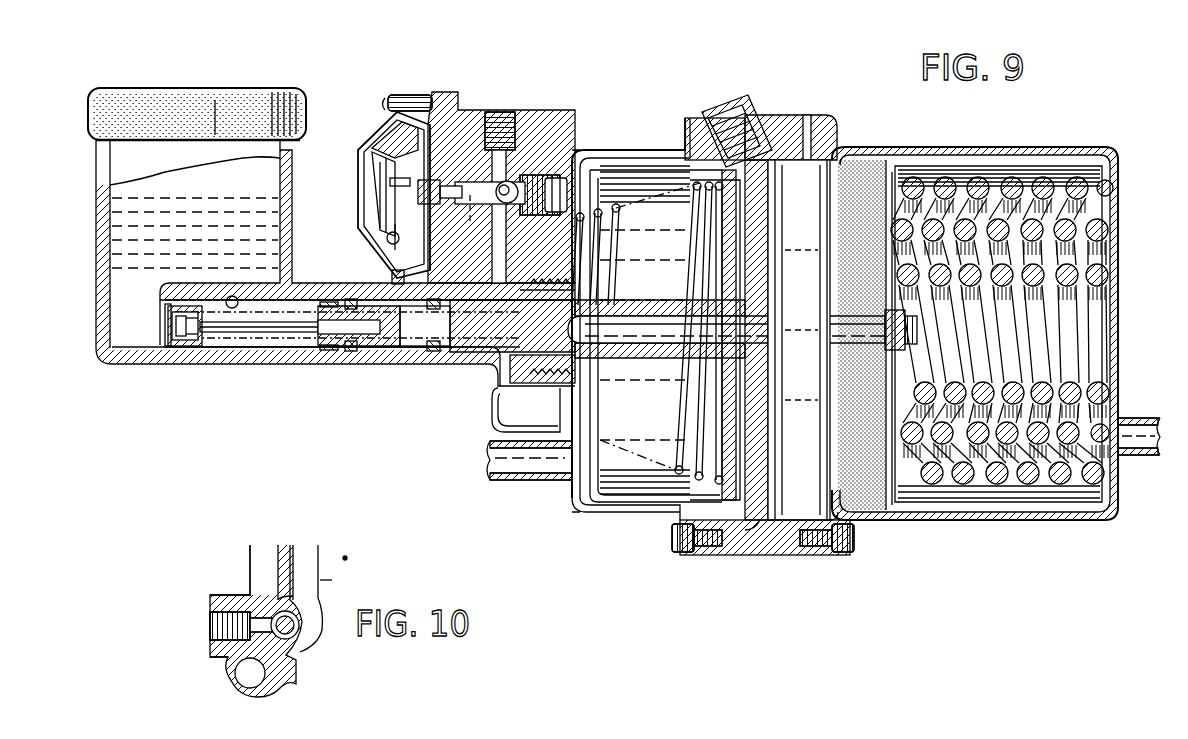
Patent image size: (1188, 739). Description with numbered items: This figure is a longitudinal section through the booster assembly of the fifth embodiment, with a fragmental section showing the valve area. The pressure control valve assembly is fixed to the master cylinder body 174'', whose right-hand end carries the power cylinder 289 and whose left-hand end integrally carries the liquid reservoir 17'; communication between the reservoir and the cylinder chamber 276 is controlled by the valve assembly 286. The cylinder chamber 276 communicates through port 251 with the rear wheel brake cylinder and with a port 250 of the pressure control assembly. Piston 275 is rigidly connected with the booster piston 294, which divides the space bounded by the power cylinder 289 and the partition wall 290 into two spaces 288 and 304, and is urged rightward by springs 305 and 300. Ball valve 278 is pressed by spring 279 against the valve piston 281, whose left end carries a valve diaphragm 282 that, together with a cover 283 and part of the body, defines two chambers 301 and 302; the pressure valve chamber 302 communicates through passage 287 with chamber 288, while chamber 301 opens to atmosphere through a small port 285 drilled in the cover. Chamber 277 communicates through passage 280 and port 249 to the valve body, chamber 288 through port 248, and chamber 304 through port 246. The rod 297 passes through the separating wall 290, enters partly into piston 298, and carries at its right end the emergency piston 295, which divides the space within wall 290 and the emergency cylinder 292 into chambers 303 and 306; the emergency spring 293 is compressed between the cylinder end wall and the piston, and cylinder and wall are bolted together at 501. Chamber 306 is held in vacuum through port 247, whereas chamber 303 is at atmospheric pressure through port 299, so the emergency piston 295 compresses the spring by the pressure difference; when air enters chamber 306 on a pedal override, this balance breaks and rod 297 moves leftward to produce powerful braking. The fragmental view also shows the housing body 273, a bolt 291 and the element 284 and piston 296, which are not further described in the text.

In FIG. 9, the liquid reservoir 17' is at (312, 237).
In FIG. 9, the master cylinder body 174'' is at (200, 354).
In FIG. 9, the port 246 is at (740, 118).
In FIG. 9, the port 247 is at (1140, 420).
In FIG. 9, the port 248 is at (515, 482).
In FIG. 9, the port 249 is at (498, 112).
In FIG. 10, the port 250 is at (210, 626).
In FIG. 9, the port 251 is at (230, 300).
In FIG. 10, the housing body 273 is at (292, 660).
In FIG. 9, the piston 275 is at (405, 360).
In FIG. 9, the cylinder chamber 276 is at (262, 347).
In FIG. 9, the chamber 277 is at (445, 364).
In FIG. 9, the ball valve 278 is at (540, 172).
In FIG. 9, the spring 279 is at (552, 176).
In FIG. 9, the passage 280 is at (512, 206).
In FIG. 9, the valve piston 281 is at (480, 200).
In FIG. 10, the valve piston 281 is at (298, 614).
In FIG. 9, the valve diaphragm 282 is at (388, 132).
In FIG. 9, the cover 283 is at (386, 232).
In FIG. 9, the diaphragm 284 is at (372, 154).
In FIG. 9, the small port 285 is at (378, 194).
In FIG. 9, the valve assembly 286 is at (166, 364).
In FIG. 9, the passage 287 is at (392, 276).
In FIG. 10, the passage 287 is at (238, 680).
In FIG. 9, the chamber 288 is at (605, 507).
In FIG. 9, the power cylinder 289 is at (636, 522).
In FIG. 9, the partition wall 290 is at (756, 540).
In FIG. 9, the bolt 291 is at (698, 550).
In FIG. 9, the emergency cylinder 292 is at (900, 509).
In FIG. 9, the emergency spring 293 is at (968, 484).
In FIG. 9, the booster piston 294 is at (700, 428).
In FIG. 9, the emergency piston 295 is at (885, 420).
In FIG. 9, the piston 296 is at (622, 350).
In FIG. 9, the rod 297 is at (786, 340).
In FIG. 9, the piston 298 is at (760, 304).
In FIG. 9, the port 299 is at (808, 118).
In FIG. 9, the spring 300 is at (608, 258).
In FIG. 9, the chamber 301 is at (368, 244).
In FIG. 9, the pressure valve chamber 302 is at (466, 294).
In FIG. 9, the chamber 303 is at (825, 436).
In FIG. 9, the chamber 304 is at (750, 465).
In FIG. 9, the spring 305 is at (310, 354).
In FIG. 9, the chamber 306 is at (1028, 500).
In FIG. 9, the bolt connection 501 is at (820, 548).